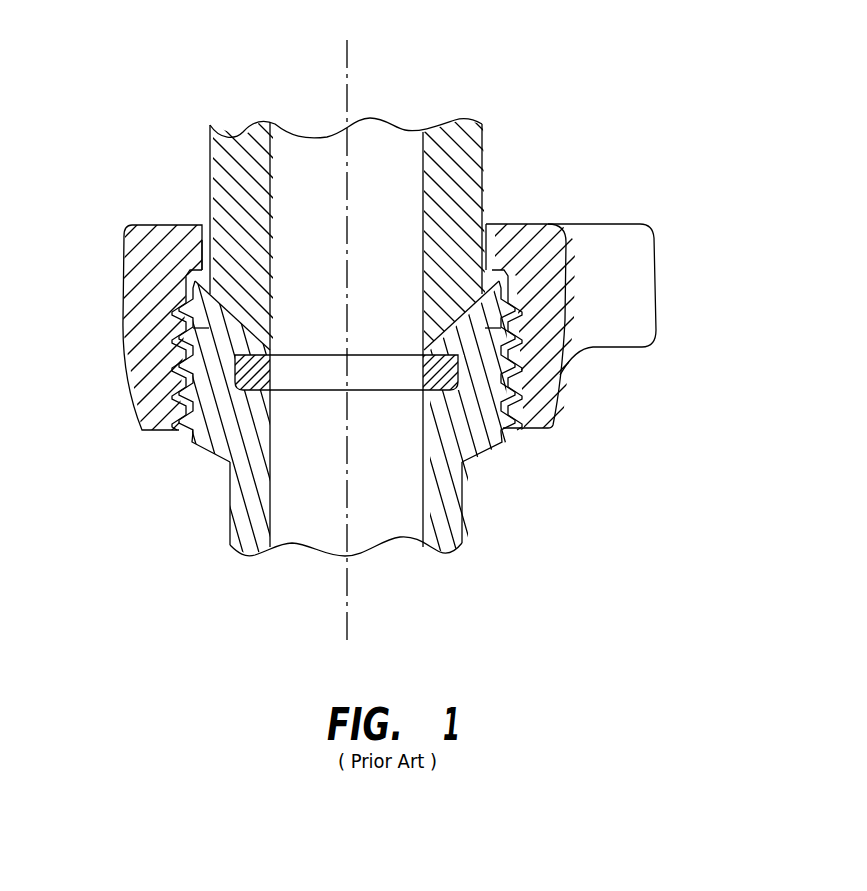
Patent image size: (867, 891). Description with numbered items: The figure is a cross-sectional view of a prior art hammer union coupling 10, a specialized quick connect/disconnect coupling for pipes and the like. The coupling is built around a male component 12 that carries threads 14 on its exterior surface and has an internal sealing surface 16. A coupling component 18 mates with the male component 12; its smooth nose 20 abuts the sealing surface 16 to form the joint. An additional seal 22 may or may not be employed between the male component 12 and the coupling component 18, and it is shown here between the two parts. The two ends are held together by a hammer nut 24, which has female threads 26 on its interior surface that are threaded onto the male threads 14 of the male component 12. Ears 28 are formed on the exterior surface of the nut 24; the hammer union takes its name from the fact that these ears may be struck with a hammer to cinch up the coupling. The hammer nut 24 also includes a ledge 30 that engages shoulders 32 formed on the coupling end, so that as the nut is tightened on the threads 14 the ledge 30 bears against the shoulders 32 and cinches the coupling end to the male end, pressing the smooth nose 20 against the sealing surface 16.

The hammer union coupling 10 is at (563, 93).
The male component 12 is at (462, 543).
The threads 14 is at (500, 442).
The internal sealing surface 16 is at (478, 327).
The coupling component 18 is at (482, 160).
The smooth nose 20 is at (458, 262).
The seal 22 is at (273, 378).
The hammer nut 24 is at (130, 222).
The female threads 26 is at (183, 298).
The ears 28 is at (658, 268).
The ledge 30 is at (200, 278).
The shoulders 32 is at (222, 282).